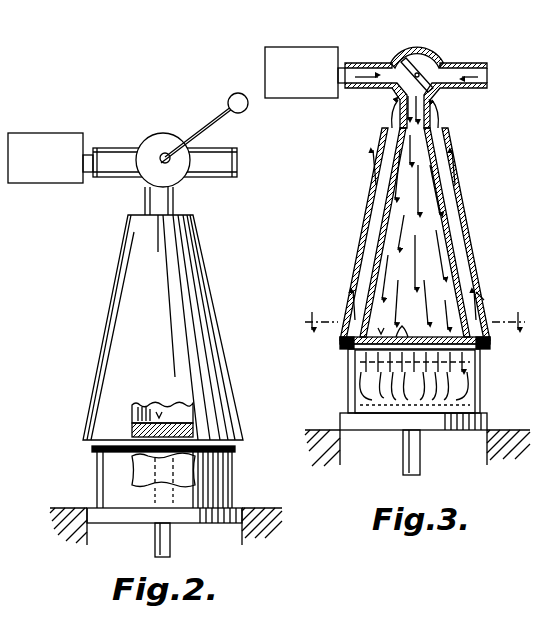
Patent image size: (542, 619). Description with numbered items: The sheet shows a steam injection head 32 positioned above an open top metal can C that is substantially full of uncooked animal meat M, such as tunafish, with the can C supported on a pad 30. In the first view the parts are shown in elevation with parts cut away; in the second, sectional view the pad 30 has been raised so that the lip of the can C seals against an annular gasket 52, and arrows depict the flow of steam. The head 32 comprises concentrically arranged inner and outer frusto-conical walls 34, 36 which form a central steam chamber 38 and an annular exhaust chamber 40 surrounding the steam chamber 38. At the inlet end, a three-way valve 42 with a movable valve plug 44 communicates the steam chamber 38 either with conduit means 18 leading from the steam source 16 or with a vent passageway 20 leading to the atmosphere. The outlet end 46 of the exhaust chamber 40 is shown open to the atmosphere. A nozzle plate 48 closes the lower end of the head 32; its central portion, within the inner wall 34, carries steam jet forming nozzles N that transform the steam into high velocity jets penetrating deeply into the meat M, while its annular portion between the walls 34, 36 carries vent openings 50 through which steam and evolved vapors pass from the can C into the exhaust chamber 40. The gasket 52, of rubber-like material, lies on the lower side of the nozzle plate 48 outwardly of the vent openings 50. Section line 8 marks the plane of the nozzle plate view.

In FIG. 2, the steam source 16 is at (48, 133).
In FIG. 3, the steam source 16 is at (300, 47).
In FIG. 2, the conduit means 18 is at (90, 172).
In FIG. 3, the conduit means 18 is at (348, 88).
In FIG. 2, the vent passageway 20 is at (237, 160).
In FIG. 3, the vent passageway 20 is at (487, 78).
In FIG. 2, the pad 30 is at (183, 522).
In FIG. 3, the pad 30 is at (440, 430).
In FIG. 2, the steam injection head 32 is at (212, 268).
In FIG. 3, the steam injection head 32 is at (462, 203).
In FIG. 3, the inner frusto-conical wall 34 is at (452, 252).
In FIG. 2, the outer frusto-conical wall 36 is at (205, 337).
In FIG. 3, the outer frusto-conical wall 36 is at (470, 268).
In FIG. 2, the steam chamber 38 is at (190, 416).
In FIG. 3, the steam chamber 38 is at (372, 243).
In FIG. 3, the annular exhaust chamber 40 is at (468, 292).
In FIG. 2, the three-way valve 42 is at (148, 140).
In FIG. 3, the three-way valve 42 is at (428, 52).
In FIG. 2, the valve plug 44 is at (166, 152).
In FIG. 3, the valve plug 44 is at (415, 58).
In FIG. 2, the outlet end of exhaust chamber 46 is at (185, 213).
In FIG. 3, the outlet end of exhaust chamber 46 is at (440, 122).
In FIG. 2, the nozzle plate 48 is at (143, 410).
In FIG. 3, the nozzle plate 48 is at (404, 334).
In FIG. 3, the vent openings 50 is at (340, 342).
In FIG. 3, the annular gasket 52 is at (352, 362).
In FIG. 3, the section line 8- 8 is at (414, 315).
In FIG. 2, the can C is at (97, 473).
In FIG. 3, the can C is at (348, 406).
In FIG. 2, the meat M is at (215, 470).
In FIG. 3, the meat M is at (478, 372).
In FIG. 2, the steam jet forming nozzles N is at (158, 411).
In FIG. 3, the steam jet forming nozzles N is at (381, 327).